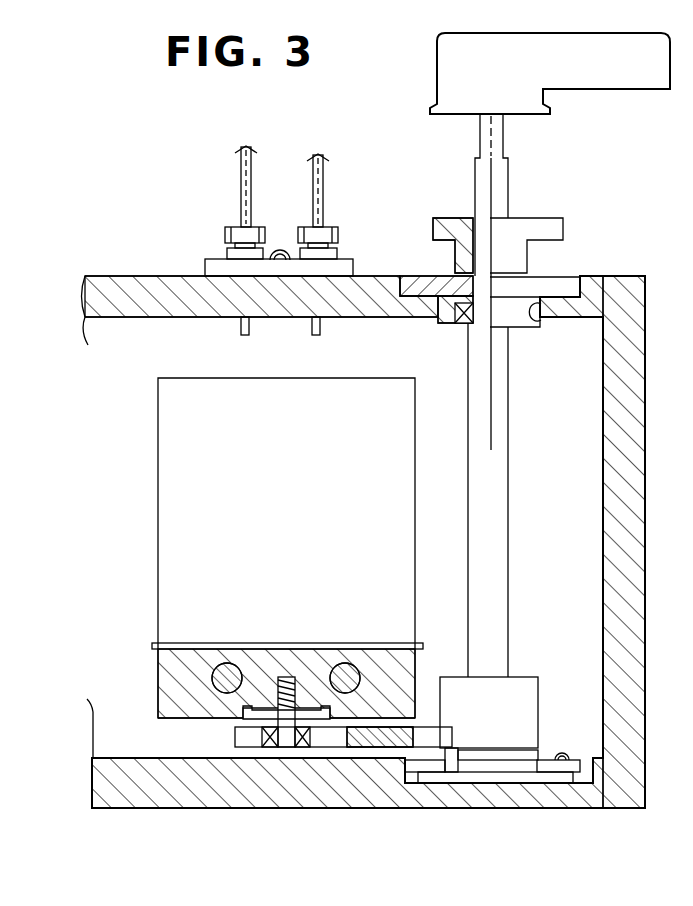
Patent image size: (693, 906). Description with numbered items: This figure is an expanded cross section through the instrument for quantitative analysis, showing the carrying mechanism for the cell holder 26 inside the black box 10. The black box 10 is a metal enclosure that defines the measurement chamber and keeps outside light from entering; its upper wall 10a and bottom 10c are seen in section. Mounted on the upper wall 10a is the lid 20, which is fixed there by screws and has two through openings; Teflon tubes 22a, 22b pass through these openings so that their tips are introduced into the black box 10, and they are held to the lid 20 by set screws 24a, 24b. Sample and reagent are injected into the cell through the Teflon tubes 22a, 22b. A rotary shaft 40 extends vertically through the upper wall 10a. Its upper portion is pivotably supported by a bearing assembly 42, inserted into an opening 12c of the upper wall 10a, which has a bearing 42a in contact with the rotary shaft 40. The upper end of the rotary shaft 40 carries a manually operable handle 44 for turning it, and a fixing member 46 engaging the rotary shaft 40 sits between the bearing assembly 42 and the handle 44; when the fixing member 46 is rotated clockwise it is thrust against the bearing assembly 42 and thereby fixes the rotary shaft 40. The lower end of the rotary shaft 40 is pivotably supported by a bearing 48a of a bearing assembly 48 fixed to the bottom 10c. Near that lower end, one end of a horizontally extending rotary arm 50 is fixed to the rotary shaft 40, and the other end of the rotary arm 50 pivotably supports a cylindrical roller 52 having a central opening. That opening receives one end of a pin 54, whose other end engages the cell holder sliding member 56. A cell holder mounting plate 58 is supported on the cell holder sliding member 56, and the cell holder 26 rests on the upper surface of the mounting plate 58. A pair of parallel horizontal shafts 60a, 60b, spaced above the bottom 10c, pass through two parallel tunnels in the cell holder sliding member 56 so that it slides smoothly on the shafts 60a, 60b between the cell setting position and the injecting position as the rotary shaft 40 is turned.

The black box 10 is at (128, 271).
The upper wall 10a is at (378, 276).
The bottom 10c is at (544, 800).
The opening 12c is at (540, 319).
The lid 20 is at (217, 259).
The Teflon tube 22a is at (241, 177).
The Teflon tube 22b is at (323, 177).
The set screw 24a is at (232, 226).
The set screw 24b is at (337, 227).
The cell holder 26 is at (168, 427).
The rotary shaft 40 is at (510, 437).
The bearing assembly 42 is at (567, 287).
The bearing 42a is at (473, 313).
The manually operable handle 44 is at (601, 78).
The fixing member 46 is at (548, 228).
The bearing assembly 48 is at (432, 781).
The bearing 48a is at (457, 760).
The rotary arm 50 is at (378, 748).
The cylindrical roller 52 is at (266, 745).
The pin 54 is at (287, 750).
The cell holder sliding member 56 is at (165, 672).
The cell holder mounting plate 58 is at (156, 643).
The shaft 60a is at (360, 680).
The shaft 60b is at (212, 681).